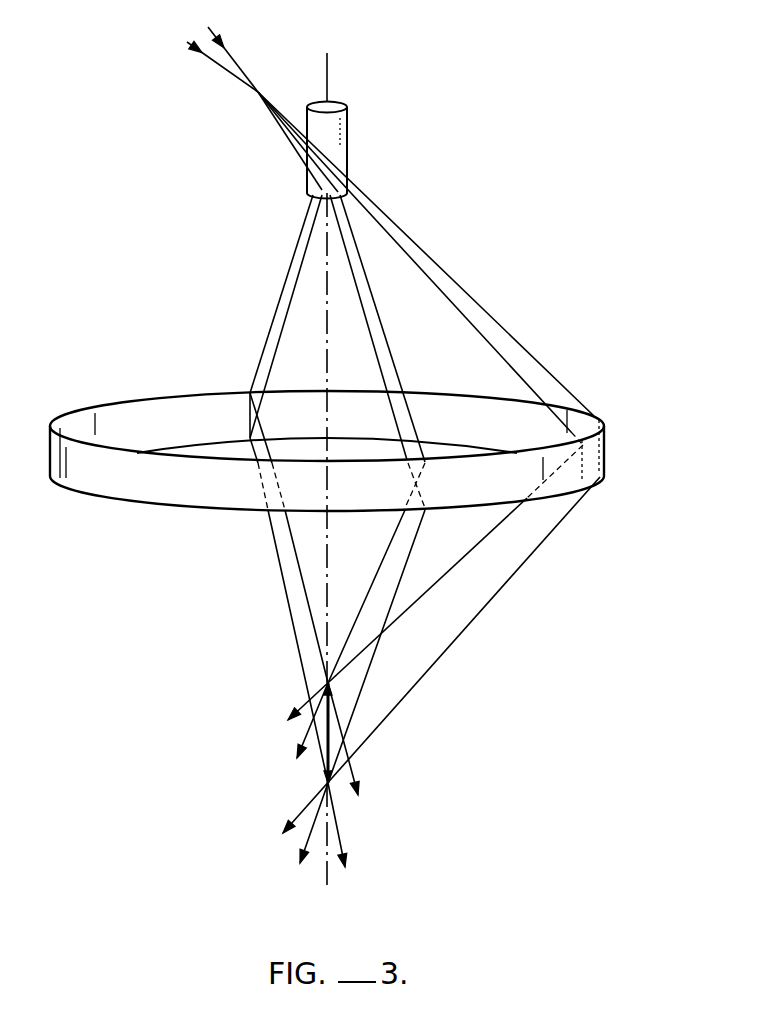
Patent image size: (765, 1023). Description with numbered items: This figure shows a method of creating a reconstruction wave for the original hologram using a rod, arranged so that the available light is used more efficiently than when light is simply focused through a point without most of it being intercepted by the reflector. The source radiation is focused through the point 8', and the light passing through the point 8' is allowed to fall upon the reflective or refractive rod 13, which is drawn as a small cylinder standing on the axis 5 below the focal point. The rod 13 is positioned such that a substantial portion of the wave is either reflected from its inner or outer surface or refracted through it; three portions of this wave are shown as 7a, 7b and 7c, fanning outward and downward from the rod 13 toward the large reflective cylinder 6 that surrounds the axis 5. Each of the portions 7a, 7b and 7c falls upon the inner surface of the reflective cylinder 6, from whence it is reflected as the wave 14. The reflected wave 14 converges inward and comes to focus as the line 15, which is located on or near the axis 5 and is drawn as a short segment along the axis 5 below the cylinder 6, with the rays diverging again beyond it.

The axis 5 is at (328, 353).
The reflective cylinder 6 is at (606, 437).
The wave portion 7a is at (480, 316).
The wave portion 7b is at (381, 323).
The wave portion 7c is at (285, 283).
The point 8' is at (241, 60).
The reflective or refractive rod 13 is at (347, 129).
The wave 14 is at (500, 567).
The line 15 is at (330, 708).